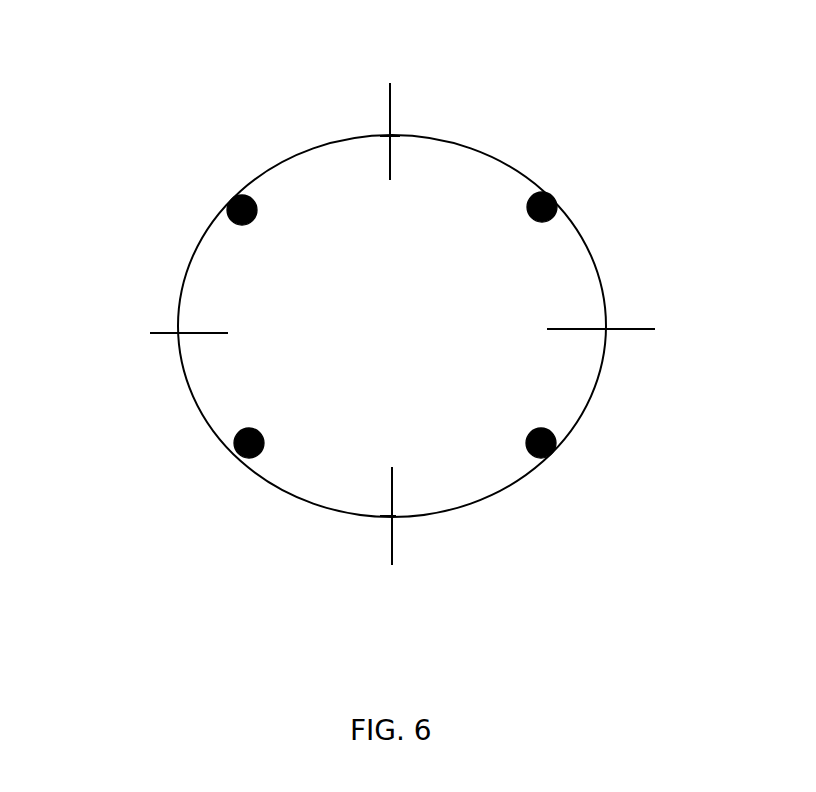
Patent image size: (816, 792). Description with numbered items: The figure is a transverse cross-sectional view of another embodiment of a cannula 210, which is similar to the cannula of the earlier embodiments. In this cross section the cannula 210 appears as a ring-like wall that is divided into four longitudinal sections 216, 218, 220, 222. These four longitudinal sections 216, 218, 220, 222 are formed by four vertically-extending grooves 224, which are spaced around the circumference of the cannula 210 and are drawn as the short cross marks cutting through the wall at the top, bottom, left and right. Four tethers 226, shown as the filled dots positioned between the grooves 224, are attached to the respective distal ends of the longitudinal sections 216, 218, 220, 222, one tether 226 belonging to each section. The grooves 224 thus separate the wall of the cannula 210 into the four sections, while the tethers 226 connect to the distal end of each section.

The cannula 210 is at (282, 132).
The longitudinal section 216 is at (595, 267).
The longitudinal section 218 is at (530, 470).
The longitudinal section 220 is at (217, 435).
The longitudinal section 222 is at (200, 250).
The vertically-extending groove 224 is at (390, 136).
The tether 226 is at (550, 193).